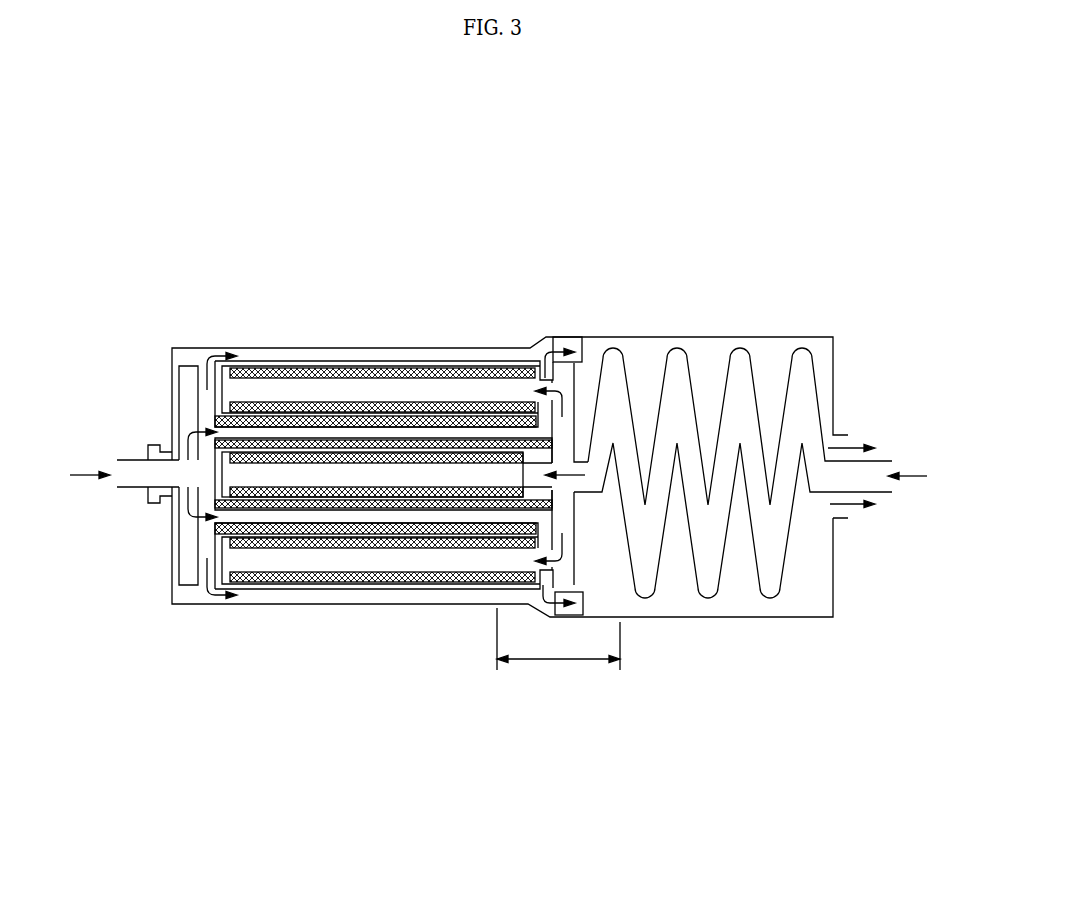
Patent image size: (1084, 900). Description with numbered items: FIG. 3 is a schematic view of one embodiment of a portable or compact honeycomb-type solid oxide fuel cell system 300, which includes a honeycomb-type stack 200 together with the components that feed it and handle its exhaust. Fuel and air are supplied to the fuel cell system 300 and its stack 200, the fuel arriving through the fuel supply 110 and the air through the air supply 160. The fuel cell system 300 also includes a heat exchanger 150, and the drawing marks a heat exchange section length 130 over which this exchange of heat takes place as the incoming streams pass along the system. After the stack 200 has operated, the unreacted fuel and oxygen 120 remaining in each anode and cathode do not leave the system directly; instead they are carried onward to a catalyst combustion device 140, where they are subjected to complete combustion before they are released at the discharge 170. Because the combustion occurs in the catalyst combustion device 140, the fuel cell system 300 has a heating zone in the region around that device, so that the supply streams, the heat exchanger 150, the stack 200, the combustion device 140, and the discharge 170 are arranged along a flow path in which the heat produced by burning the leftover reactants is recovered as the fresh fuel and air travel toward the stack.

The fuel supply 110 is at (84, 470).
The unreacted fuel and oxygen 120 is at (536, 346).
The heat exchange section length 130 is at (558, 662).
The catalyst combustion device 140 is at (572, 337).
The heat exchanger 150 is at (750, 358).
The air supply 160 is at (915, 475).
The discharge 170 is at (853, 505).
The stack 200 is at (377, 588).
The fuel cell system 300 is at (731, 178).